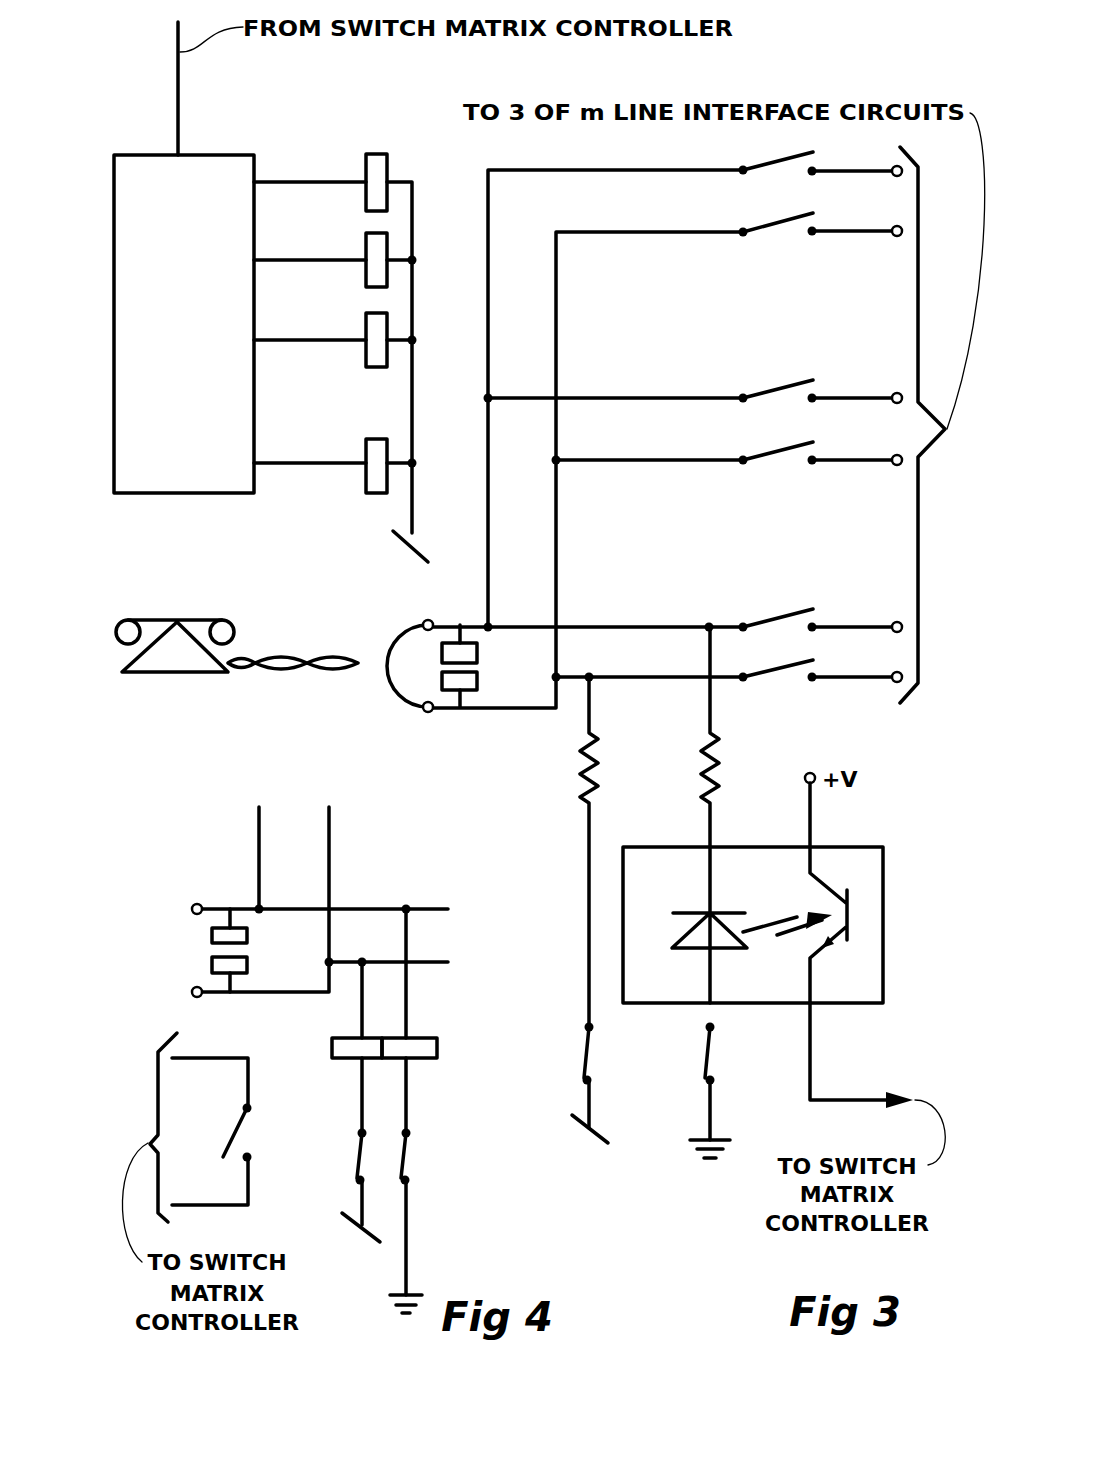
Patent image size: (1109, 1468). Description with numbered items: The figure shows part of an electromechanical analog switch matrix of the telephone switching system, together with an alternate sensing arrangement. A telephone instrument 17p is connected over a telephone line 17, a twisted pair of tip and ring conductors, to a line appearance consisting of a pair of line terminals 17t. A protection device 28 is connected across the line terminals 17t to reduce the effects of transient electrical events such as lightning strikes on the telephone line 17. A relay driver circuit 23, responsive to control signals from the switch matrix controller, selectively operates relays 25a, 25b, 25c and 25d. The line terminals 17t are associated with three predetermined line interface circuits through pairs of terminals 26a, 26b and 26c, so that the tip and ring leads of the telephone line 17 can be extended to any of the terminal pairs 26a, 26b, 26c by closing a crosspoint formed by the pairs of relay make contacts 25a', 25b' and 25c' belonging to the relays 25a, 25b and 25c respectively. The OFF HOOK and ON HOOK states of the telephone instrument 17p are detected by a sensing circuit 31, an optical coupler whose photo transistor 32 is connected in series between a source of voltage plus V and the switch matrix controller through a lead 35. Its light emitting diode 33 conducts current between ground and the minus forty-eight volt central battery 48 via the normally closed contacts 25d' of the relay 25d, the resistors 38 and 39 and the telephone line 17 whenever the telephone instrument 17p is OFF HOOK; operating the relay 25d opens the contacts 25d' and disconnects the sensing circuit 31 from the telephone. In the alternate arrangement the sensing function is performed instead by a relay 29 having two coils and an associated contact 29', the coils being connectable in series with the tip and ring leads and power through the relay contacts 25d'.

In FIG. 3, the relay driver circuit 23 is at (195, 155).
In FIG. 3, the relay 25a is at (341, 172).
In FIG. 3, the relay 25b is at (343, 253).
In FIG. 3, the relay 25c is at (342, 333).
In FIG. 3, the relay 25d is at (342, 456).
In FIG. 3, the relay make contacts 25a' is at (755, 194).
In FIG. 3, the relay make contacts 25b' is at (747, 422).
In FIG. 3, the relay make contacts 25c' is at (739, 628).
In FIG. 3, the normally closed contacts 25d' is at (649, 1082).
In FIG. 4, the normally closed contacts 25d' is at (420, 1212).
In FIG. 3, the pair of terminals 26a is at (892, 233).
In FIG. 3, the pair of terminals 26b is at (892, 460).
In FIG. 3, the pair of terminals 26c is at (892, 677).
In FIG. 3, the telephone line 17 is at (307, 670).
In FIG. 3, the telephone instrument 17p is at (177, 622).
In FIG. 3, the line terminals 17t is at (426, 710).
In FIG. 4, the line terminals 17t is at (196, 915).
In FIG. 3, the protection device 28 is at (477, 668).
In FIG. 4, the protection device 28 is at (243, 950).
In FIG. 4, the relay 29 is at (392, 1028).
In FIG. 4, the contact 29' is at (242, 1131).
In FIG. 3, the sensing circuit 31 is at (883, 890).
In FIG. 3, the phototransistor 32 is at (850, 918).
In FIG. 3, the light emitting diode 33 is at (705, 913).
In FIG. 3, the lead 35 is at (822, 1100).
In FIG. 3, the resistor 38 is at (580, 760).
In FIG. 3, the resistor 39 is at (702, 745).
In FIG. 3, the -48 volt supply 48 is at (476, 850).
In FIG. 4, the -48 volt supply 48 is at (342, 1241).